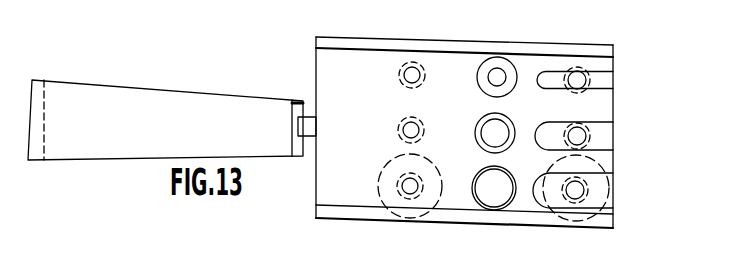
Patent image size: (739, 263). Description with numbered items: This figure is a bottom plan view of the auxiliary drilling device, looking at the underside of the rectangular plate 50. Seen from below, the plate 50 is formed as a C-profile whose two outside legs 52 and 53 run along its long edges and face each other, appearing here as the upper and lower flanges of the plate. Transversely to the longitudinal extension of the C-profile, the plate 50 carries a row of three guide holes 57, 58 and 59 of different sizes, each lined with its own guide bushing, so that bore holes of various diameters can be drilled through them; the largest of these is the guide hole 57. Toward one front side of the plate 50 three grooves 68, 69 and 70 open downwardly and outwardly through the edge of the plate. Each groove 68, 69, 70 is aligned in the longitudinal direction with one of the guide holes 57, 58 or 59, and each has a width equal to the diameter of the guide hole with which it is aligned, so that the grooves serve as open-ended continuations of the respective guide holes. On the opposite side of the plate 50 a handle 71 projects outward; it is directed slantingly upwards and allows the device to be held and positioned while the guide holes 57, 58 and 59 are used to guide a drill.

The rectangular plate 50 is at (315, 172).
The outside leg of the C-profile 52 is at (358, 45).
The outside leg of the C-profile 53 is at (333, 212).
The guide hole 57 is at (492, 189).
The guide hole 58 is at (490, 131).
The guide hole 59 is at (497, 76).
The groove 68 is at (608, 193).
The groove 69 is at (598, 133).
The groove 70 is at (600, 80).
The handle 71 is at (158, 99).